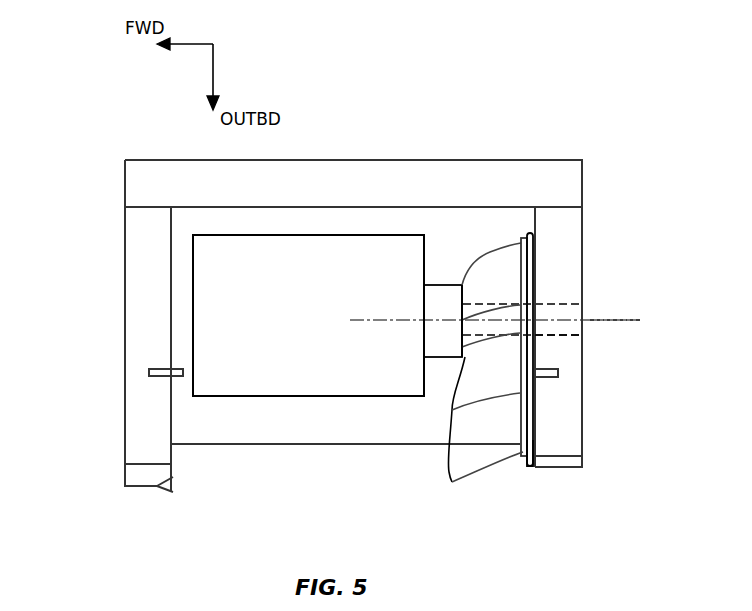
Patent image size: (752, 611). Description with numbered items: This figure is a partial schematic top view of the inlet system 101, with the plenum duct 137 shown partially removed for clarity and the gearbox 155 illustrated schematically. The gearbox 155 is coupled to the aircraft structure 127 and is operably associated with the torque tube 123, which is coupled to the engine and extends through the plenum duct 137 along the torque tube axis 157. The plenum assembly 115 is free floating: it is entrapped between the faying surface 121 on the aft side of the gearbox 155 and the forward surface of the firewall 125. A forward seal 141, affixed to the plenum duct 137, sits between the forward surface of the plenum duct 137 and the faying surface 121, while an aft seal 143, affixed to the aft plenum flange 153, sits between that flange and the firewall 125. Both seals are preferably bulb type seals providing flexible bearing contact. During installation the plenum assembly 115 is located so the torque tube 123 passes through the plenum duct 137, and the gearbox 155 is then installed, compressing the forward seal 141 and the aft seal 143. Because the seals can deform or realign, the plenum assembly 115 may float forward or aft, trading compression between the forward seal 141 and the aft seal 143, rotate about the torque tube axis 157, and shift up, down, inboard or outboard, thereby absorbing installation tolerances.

The inlet system 101 is at (507, 110).
The plenum assembly 115 is at (497, 477).
The faying surface 121 is at (462, 357).
The torque tube 123 is at (560, 336).
The firewall 125 is at (582, 268).
The aircraft structure 127 is at (125, 397).
The plenum duct 137 is at (452, 482).
The forward seal 141 is at (466, 275).
The aft seal 143 is at (531, 233).
The aft plenum flange 153 is at (531, 466).
The gearbox 155 is at (193, 320).
The torque tube axis 157 is at (618, 323).